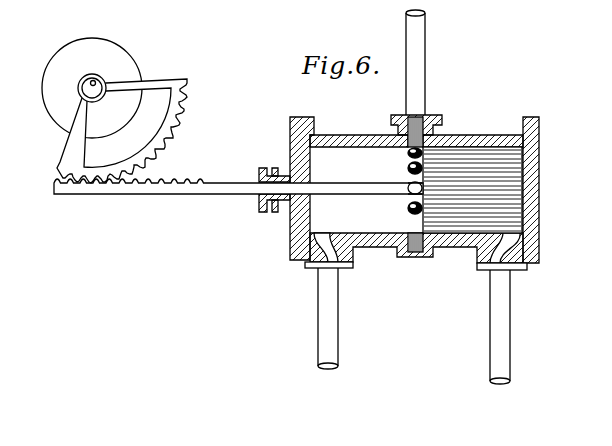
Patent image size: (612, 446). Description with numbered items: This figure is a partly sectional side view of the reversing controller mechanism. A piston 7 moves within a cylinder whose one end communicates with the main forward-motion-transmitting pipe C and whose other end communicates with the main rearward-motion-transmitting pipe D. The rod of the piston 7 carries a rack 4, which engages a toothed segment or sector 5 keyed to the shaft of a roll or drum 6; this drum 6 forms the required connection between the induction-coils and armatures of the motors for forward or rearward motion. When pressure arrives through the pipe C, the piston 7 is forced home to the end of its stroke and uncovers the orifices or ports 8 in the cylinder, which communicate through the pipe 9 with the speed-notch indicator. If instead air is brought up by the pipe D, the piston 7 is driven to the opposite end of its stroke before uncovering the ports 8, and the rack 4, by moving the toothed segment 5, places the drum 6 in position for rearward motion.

The rack 4 is at (183, 188).
The toothed segment or sector 5 is at (165, 131).
The roll or drum 6 is at (121, 60).
The piston 7 is at (472, 190).
The orifices or ports 8 is at (410, 170).
The pipe 9 is at (413, 77).
The main forward-motion-transmitting pipe C is at (329, 315).
The main rearward-motion-transmitting pipe D is at (502, 323).